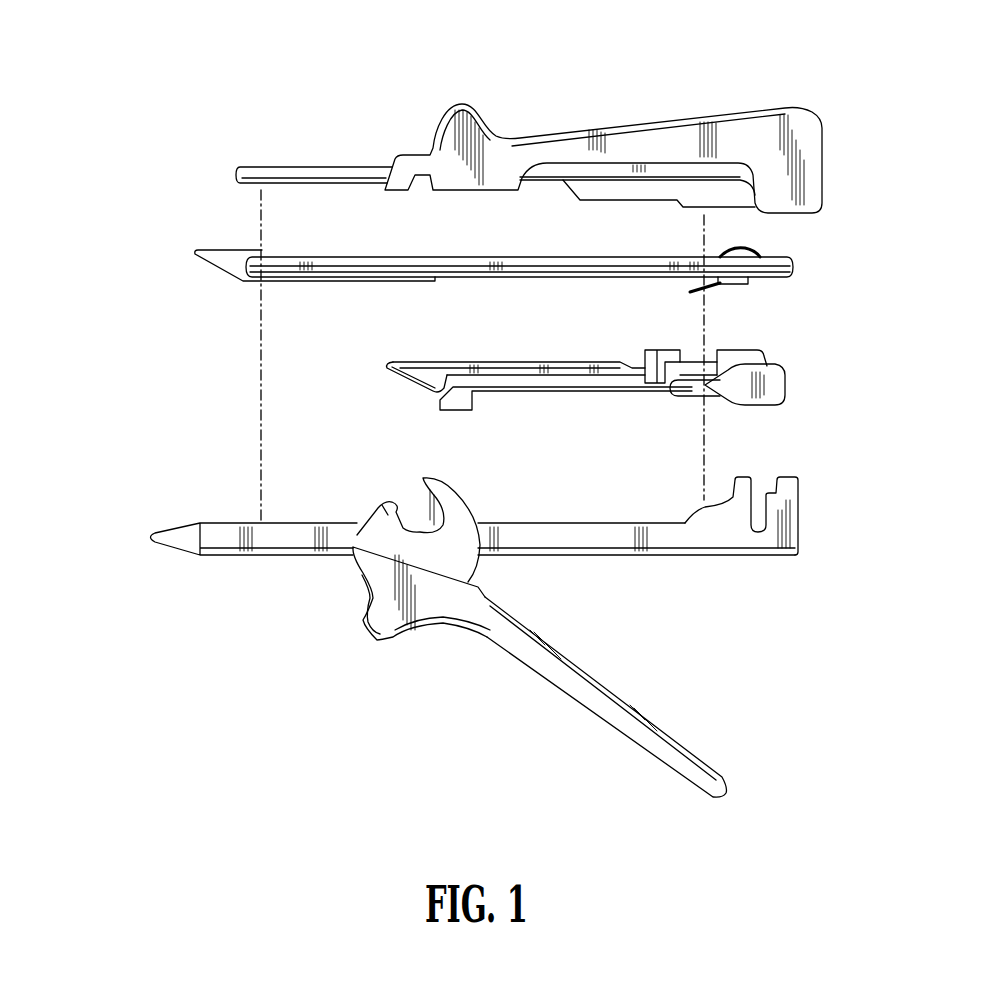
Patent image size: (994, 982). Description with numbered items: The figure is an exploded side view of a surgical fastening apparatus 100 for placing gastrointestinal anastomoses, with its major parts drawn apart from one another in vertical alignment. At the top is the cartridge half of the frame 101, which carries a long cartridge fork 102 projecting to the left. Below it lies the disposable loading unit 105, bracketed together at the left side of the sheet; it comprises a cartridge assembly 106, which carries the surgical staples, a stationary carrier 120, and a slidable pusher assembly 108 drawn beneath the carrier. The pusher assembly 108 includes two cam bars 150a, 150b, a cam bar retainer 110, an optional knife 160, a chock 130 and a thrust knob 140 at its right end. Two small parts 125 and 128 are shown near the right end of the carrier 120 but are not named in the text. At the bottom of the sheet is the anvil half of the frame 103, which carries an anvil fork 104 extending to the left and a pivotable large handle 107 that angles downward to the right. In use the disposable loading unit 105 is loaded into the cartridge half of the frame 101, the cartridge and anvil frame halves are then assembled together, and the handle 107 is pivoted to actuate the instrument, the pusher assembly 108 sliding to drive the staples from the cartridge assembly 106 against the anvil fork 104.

The surgical fastening apparatus 100 is at (866, 27).
The cartridge half of frame 101 is at (562, 106).
The cartridge fork 102 is at (327, 167).
The anvil half of frame 103 is at (540, 637).
The anvil fork 104 is at (258, 553).
The disposable loading unit 105 is at (108, 223).
The cartridge assembly 106 is at (318, 282).
The pivotable large handle 107 is at (607, 718).
The slidable pusher assembly 108 is at (588, 396).
The cam bar retainer 110 is at (743, 358).
The stationary carrier 120 is at (417, 256).
The bracket 125 is at (730, 285).
The bump 128 is at (740, 248).
The chock 130 is at (660, 348).
The thrust knob 140 is at (783, 403).
The cam bar 150a is at (397, 377).
The cam bar 150b is at (530, 362).
The knife 160 is at (543, 392).